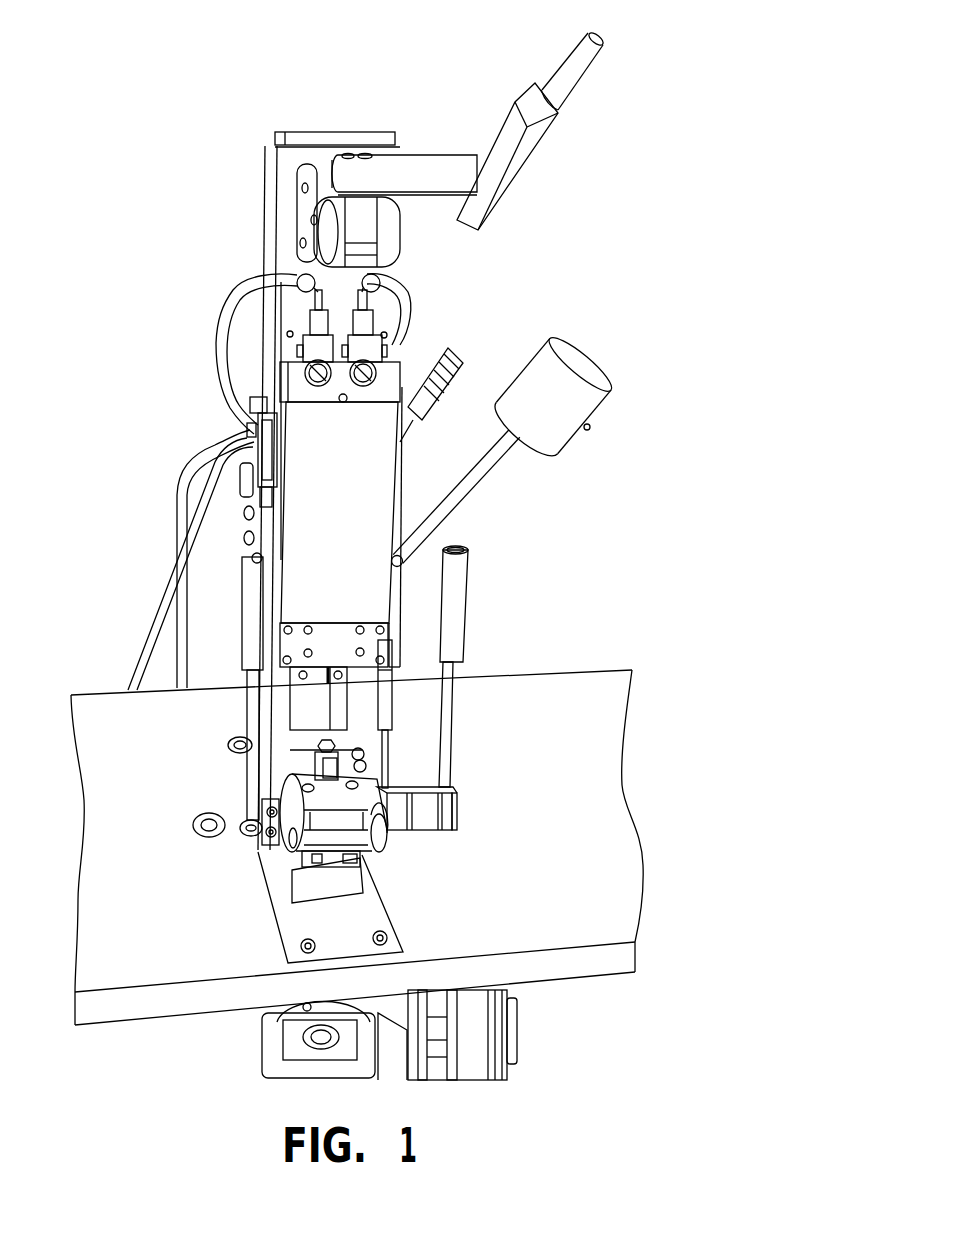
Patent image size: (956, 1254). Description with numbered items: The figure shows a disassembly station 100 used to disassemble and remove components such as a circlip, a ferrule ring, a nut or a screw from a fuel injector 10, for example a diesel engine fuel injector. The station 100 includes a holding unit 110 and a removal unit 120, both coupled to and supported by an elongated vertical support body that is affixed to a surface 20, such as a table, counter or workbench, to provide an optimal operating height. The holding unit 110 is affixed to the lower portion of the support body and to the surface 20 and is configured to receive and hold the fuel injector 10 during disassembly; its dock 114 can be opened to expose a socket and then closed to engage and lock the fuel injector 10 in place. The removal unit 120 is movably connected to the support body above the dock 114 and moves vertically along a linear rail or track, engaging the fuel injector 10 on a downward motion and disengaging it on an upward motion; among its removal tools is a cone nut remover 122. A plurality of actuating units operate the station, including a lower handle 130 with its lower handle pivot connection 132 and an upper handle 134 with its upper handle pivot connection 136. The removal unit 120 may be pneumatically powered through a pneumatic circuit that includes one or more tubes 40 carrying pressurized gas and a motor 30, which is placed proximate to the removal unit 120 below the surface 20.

The fuel injector 10 is at (397, 753).
The surface 20 is at (578, 797).
The motor 30 is at (508, 1010).
The tubes 40 is at (403, 297).
The disassembly station 100 is at (260, 138).
The holding unit 110 is at (278, 230).
The dock 114 is at (257, 836).
The removal unit 120 is at (313, 527).
The cone nut remover 122 is at (323, 670).
The lower handle 130 is at (458, 607).
The lower handle pivot connection 132 is at (390, 840).
The upper handle 134 is at (572, 73).
The upper handle pivot connection 136 is at (395, 218).